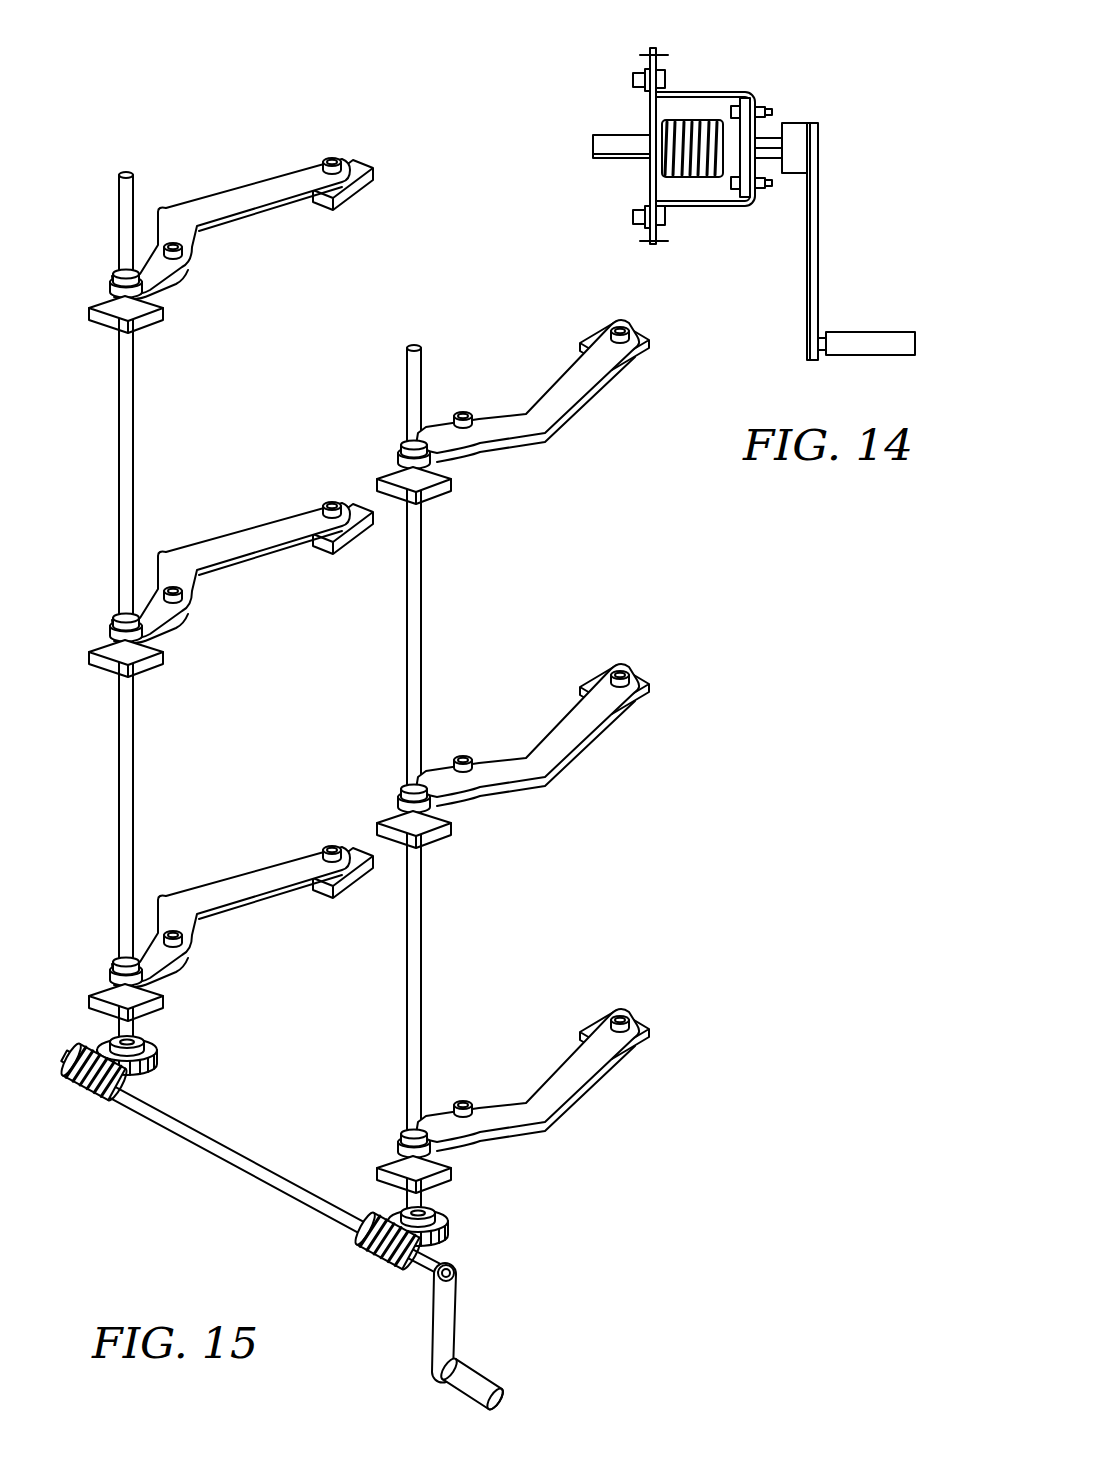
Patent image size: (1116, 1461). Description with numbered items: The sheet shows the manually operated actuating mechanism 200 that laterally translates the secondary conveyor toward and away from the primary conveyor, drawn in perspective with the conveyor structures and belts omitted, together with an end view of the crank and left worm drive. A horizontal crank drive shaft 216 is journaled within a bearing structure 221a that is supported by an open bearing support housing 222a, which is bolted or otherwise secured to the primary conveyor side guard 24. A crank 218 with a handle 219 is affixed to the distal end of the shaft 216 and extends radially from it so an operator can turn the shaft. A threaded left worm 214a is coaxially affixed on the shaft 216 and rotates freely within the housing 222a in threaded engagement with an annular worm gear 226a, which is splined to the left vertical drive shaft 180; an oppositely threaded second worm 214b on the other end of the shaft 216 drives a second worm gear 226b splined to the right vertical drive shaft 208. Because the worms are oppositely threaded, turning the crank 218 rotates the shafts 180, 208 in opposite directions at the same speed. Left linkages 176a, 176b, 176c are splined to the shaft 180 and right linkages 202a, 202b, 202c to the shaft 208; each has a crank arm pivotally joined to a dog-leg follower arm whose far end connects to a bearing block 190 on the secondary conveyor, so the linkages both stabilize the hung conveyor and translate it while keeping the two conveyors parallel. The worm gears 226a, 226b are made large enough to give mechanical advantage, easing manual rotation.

In FIG. 14, the primary conveyor side guard 24 is at (650, 120).
In FIG. 14, the open bearing support housing 222a is at (713, 92).
In FIG. 14, the bearing structure 221a is at (752, 128).
In FIG. 14, the horizontal crank drive shaft 216 is at (620, 162).
In FIG. 15, the horizontal crank drive shaft 216 is at (240, 1163).
In FIG. 14, the left worm 214a is at (690, 178).
In FIG. 15, the left worm 214a is at (380, 1256).
In FIG. 15, the second worm 214b is at (92, 1084).
In FIG. 14, the crank 218 is at (820, 244).
In FIG. 15, the crank 218 is at (428, 1324).
In FIG. 14, the handle 219 is at (865, 357).
In FIG. 15, the handle 219 is at (497, 1390).
In FIG. 15, the actuating mechanism 200 is at (378, 775).
In FIG. 15, the right vertical drive shaft 208 is at (118, 822).
In FIG. 15, the left vertical drive shaft 180 is at (423, 986).
In FIG. 15, the right linkage 202a is at (236, 877).
In FIG. 15, the right linkage 202b is at (233, 536).
In FIG. 15, the right linkage 202c is at (236, 190).
In FIG. 15, the left linkage 176a is at (548, 1101).
In FIG. 15, the left linkage 176b is at (590, 750).
In FIG. 15, the left linkage 176c is at (588, 403).
In FIG. 15, the bearing block 190 is at (650, 1037).
In FIG. 15, the worm gear 226a is at (450, 1230).
In FIG. 15, the second worm gear 226b is at (160, 1060).